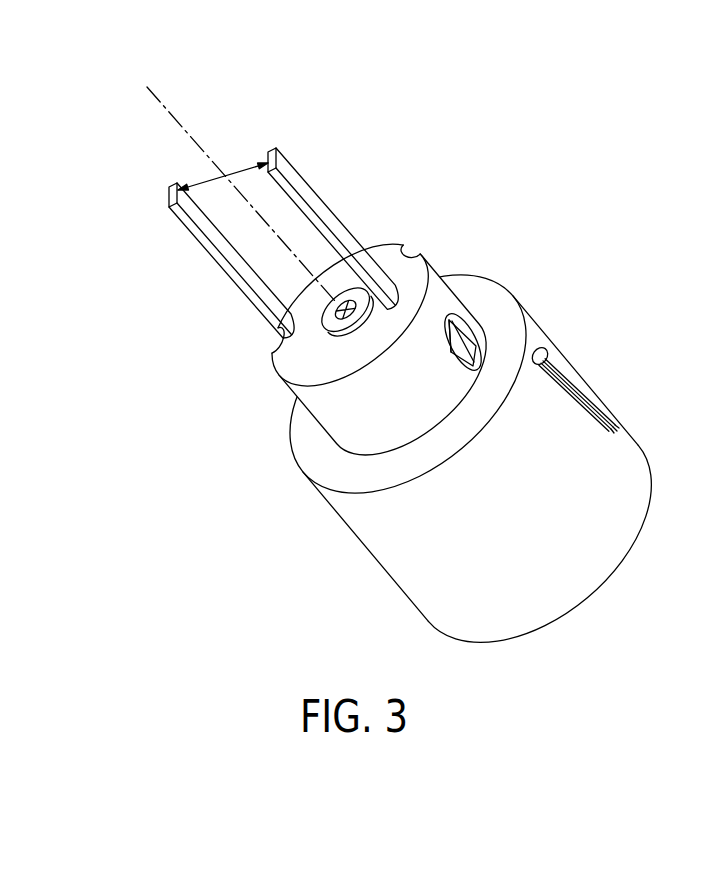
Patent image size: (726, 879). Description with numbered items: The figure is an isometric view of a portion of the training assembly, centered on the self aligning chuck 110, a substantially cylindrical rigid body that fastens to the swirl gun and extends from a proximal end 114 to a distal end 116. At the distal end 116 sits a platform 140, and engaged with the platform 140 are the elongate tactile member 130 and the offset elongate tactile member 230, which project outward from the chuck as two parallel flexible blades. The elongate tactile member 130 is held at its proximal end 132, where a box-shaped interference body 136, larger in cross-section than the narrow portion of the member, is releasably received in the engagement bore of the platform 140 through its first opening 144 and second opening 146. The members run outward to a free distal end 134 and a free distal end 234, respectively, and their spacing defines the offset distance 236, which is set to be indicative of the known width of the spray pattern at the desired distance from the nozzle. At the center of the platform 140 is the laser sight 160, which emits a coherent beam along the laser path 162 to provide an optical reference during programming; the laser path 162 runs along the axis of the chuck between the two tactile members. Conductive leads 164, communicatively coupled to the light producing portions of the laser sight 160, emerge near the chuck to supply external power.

The self aligning chuck 110 is at (641, 453).
The proximal end 114 is at (488, 660).
The distal end 116 is at (277, 468).
The elongate tactile member 130 is at (323, 213).
The proximal end 132 is at (462, 254).
The distal end 134 is at (220, 202).
The interference body 136 is at (468, 343).
The platform 140 is at (443, 303).
The first opening 144 is at (455, 357).
The second opening 146 is at (410, 262).
The laser sight 160 is at (328, 326).
The laser path 162 is at (152, 97).
The conductive leads 164 is at (597, 396).
The offset elongate tactile member 230 is at (168, 243).
The distal end 234 is at (149, 192).
The offset distance 236 is at (232, 172).